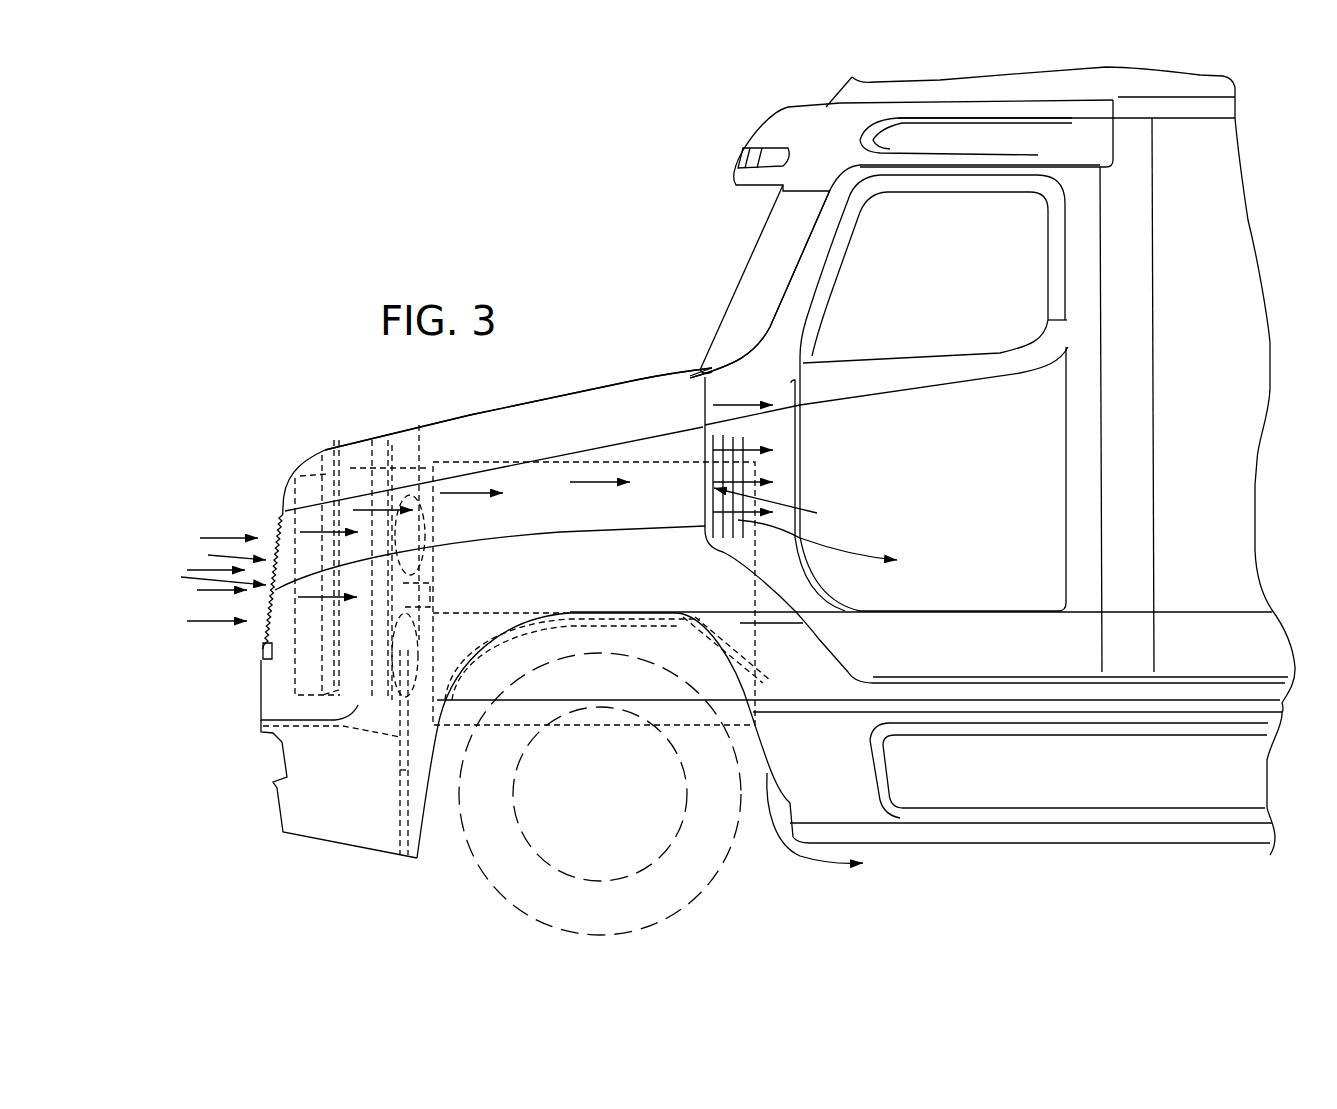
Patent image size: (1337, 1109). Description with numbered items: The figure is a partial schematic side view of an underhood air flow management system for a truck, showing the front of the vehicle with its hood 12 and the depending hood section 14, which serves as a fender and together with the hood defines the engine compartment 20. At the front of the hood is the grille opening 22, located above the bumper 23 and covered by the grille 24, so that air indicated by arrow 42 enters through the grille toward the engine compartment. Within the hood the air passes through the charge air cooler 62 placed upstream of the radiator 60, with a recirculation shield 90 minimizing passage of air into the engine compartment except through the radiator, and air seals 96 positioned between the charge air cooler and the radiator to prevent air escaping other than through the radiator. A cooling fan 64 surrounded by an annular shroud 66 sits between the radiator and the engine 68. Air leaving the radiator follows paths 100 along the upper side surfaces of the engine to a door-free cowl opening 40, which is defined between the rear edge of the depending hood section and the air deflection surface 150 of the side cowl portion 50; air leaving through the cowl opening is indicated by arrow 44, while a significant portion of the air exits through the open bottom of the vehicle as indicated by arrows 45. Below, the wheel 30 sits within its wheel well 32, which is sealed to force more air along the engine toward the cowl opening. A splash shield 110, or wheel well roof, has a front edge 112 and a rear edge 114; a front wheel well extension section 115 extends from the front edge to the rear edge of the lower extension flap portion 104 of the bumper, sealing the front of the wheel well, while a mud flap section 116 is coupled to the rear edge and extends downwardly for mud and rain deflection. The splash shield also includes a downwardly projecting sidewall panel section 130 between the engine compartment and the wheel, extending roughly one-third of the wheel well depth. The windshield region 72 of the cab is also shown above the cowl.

The hood 12 is at (557, 395).
The depending hood section 14 is at (637, 527).
The engine compartment 20 is at (513, 487).
The grille opening 22 is at (220, 554).
The bumper 23 is at (270, 788).
The grille 24 is at (207, 578).
The wheel 30 is at (481, 875).
The wheel well 32 is at (573, 617).
The cowl opening 40 is at (781, 508).
The air entering the grille 42 is at (210, 621).
The air passing through the cowl opening 44 is at (827, 548).
The air exiting through the bottom of the vehicle 45 is at (812, 857).
The side cowl portion 50 is at (727, 463).
The radiator 60 is at (340, 440).
The charge air cooler 62 is at (310, 467).
The cooling fan 64 is at (388, 440).
The annular shroud 66 is at (413, 463).
The engine 68 is at (460, 460).
The windshield 72 is at (753, 280).
The recirculation shield 90 is at (372, 440).
The air seals 96 is at (327, 463).
The air paths 100 is at (600, 480).
The lower extension flap portion 104 is at (400, 857).
The splash shield 110 is at (520, 607).
The front edge 112 is at (457, 630).
The rear edge 114 is at (767, 690).
The front wheel well extension section 115 is at (400, 797).
The mud flap section 116 is at (717, 660).
The sidewall panel section 130 is at (643, 700).
The air deflection surface 150 is at (750, 427).